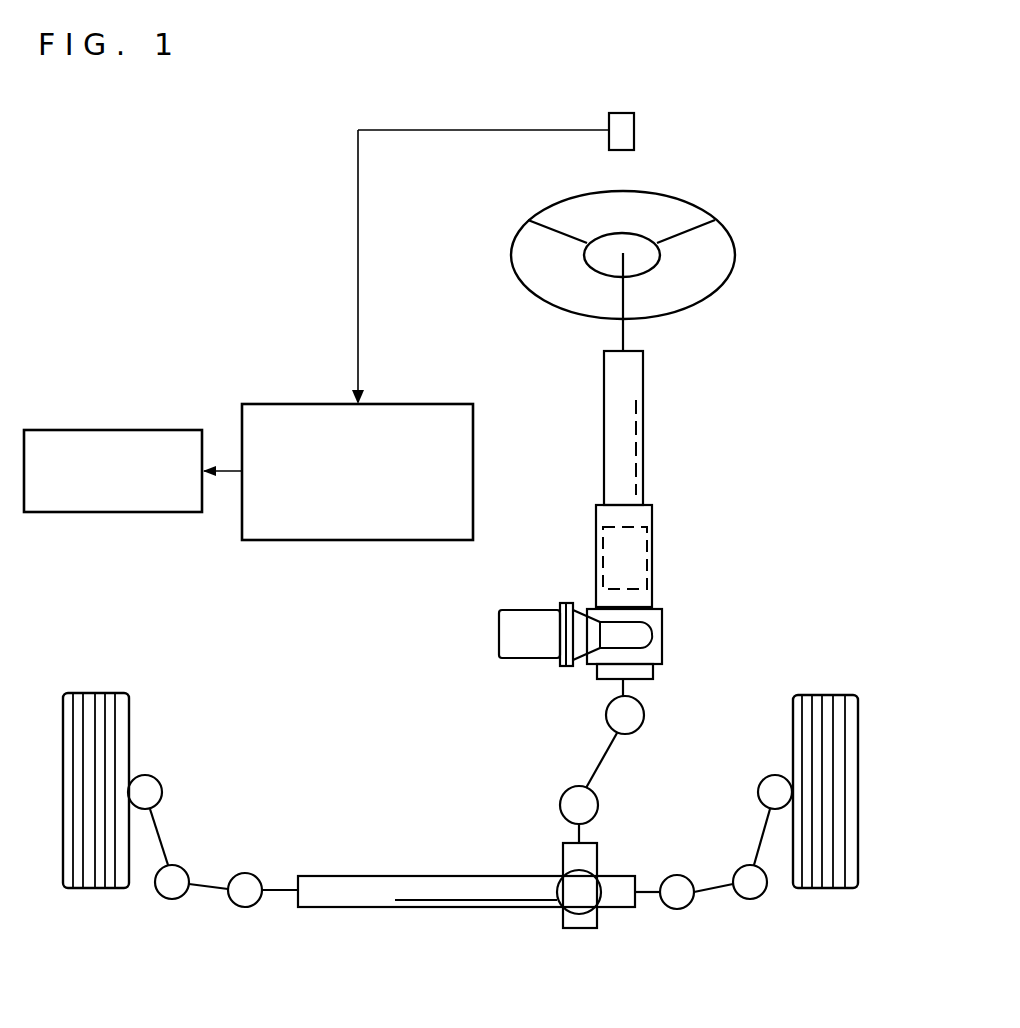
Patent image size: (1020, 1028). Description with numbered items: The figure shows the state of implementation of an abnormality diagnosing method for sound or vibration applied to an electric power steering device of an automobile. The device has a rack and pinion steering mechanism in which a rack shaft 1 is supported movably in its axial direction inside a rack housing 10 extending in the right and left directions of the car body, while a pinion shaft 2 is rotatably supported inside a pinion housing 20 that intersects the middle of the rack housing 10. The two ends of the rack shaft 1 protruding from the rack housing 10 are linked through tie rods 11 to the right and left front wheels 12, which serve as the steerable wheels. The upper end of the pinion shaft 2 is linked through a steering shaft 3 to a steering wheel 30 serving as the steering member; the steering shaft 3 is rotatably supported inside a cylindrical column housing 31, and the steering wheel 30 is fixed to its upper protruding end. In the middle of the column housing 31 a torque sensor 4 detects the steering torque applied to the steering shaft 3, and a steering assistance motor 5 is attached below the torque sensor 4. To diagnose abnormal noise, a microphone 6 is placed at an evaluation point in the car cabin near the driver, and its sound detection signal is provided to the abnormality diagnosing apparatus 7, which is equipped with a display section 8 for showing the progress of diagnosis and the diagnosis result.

The rack shaft 1 is at (283, 891).
The pinion shaft 2 is at (592, 833).
The steering shaft 3 is at (624, 334).
The torque sensor 4 is at (652, 572).
The steering assistance motor 5 is at (526, 660).
The microphone 6 is at (634, 131).
The abnormality diagnosing apparatus 7 is at (413, 404).
The display section 8 is at (143, 430).
The rack housing 10 is at (392, 876).
The tie rod 11 is at (207, 890).
The front wheel 12 is at (93, 693).
The pinion housing 20 is at (593, 858).
The steering wheel 30 is at (512, 243).
The column housing 31 is at (643, 441).